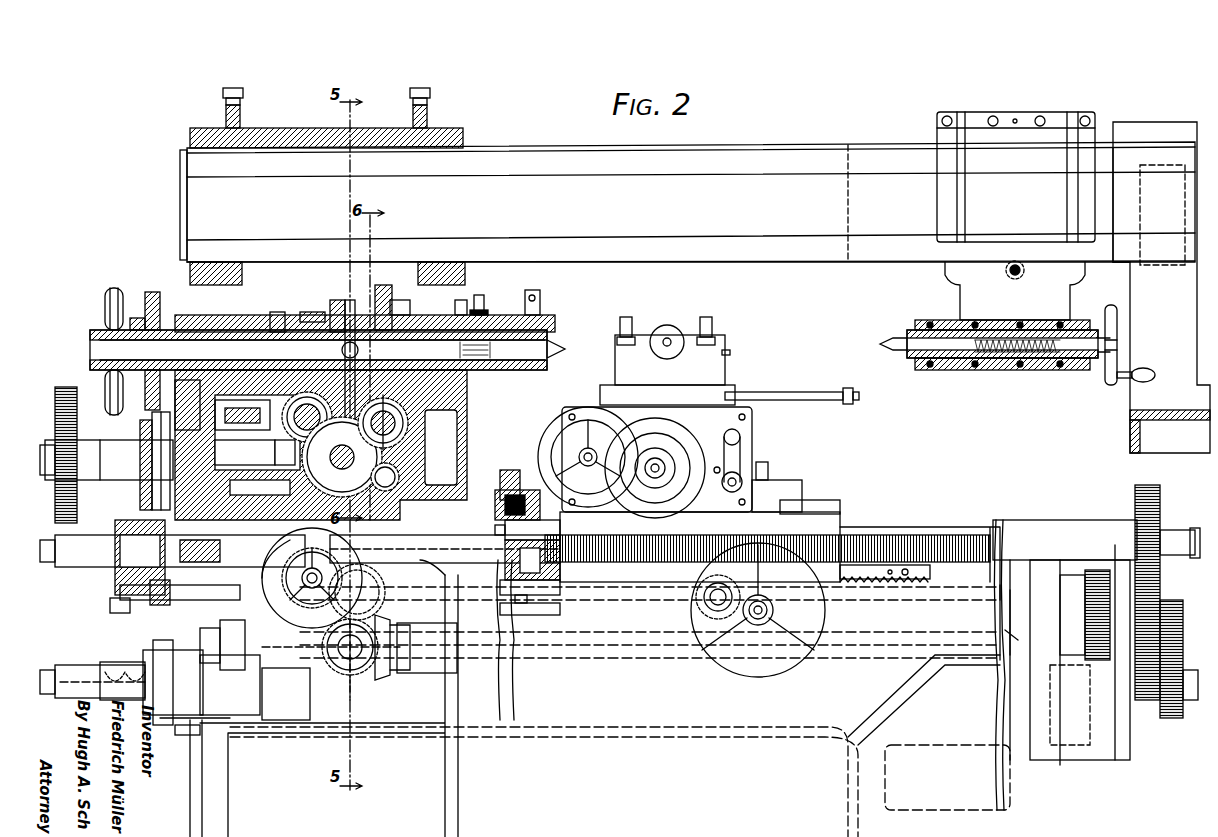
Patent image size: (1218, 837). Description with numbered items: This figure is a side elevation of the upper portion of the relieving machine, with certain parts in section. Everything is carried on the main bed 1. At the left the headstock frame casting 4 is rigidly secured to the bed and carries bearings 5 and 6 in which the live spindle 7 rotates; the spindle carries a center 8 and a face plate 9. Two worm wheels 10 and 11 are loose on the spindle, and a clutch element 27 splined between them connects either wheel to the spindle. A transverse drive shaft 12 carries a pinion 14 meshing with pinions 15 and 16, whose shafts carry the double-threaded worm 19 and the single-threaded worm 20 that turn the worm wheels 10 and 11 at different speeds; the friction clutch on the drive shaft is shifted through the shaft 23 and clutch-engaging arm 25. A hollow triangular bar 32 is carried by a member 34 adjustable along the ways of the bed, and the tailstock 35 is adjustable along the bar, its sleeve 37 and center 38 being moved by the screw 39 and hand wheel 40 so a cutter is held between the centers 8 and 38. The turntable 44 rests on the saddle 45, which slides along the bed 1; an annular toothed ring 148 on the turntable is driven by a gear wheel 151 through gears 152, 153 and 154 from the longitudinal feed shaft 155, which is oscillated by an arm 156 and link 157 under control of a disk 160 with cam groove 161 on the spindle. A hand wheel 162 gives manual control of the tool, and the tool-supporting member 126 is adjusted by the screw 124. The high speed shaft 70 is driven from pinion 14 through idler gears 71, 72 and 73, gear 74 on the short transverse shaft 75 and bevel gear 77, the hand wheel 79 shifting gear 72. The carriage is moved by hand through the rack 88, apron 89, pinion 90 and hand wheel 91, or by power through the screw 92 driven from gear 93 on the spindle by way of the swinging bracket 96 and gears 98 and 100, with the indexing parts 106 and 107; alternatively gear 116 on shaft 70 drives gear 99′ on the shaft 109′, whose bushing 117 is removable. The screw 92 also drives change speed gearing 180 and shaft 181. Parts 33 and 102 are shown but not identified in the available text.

The main bed 1 is at (650, 735).
The frame casting 4 is at (467, 455).
The bearing 5 is at (218, 315).
The bearing 6 is at (484, 310).
The live spindle 7 is at (90, 348).
The center 8 is at (555, 342).
The face plate 9 is at (540, 300).
The worm wheel 10 is at (330, 305).
The worm wheel 11 is at (378, 285).
The drive shaft 12 is at (283, 452).
The pinion 14 is at (325, 465).
The pinion 15 is at (270, 440).
The pinion 16 is at (405, 415).
The worm 19 is at (290, 415).
The worm 20 is at (395, 440).
The shaft 23 is at (392, 470).
The clutch-engaging arm 25 is at (390, 490).
The clutch element 27 is at (348, 300).
The bar 32 is at (520, 158).
The clamp plate 33 is at (320, 130).
The bar supporting member 34 is at (1170, 385).
The tailstock 35 is at (982, 110).
The sleeve 37 is at (960, 370).
The center 38 is at (890, 340).
The screw 39 is at (1025, 325).
The hand wheel 40 is at (1110, 382).
The turntable 44 is at (755, 440).
The saddle 45 is at (802, 494).
The high speed shaft 70 is at (305, 655).
The idler gear 71 is at (360, 535).
The idler gear 72 is at (345, 560).
The idler gear 73 is at (370, 585).
The gear 74 is at (355, 672).
The short transverse shaft 75 is at (320, 647).
The bevel gear 77 is at (390, 670).
The hand wheel 79 is at (290, 612).
The rack 88 is at (925, 574).
The apron 89 is at (840, 612).
The pinion 90 is at (700, 604).
The hand wheel 91 is at (745, 672).
The screw 92 is at (822, 528).
The gear 93 is at (275, 312).
The swinging bracket 96 is at (200, 412).
The gear 98 is at (242, 435).
The gear 99′ is at (238, 712).
The gear 100 is at (66, 387).
The shaft 102 is at (118, 582).
The indexing part 106 is at (120, 475).
The indexing part 107 is at (152, 428).
The shaft 109′ is at (128, 668).
The gear 116 is at (240, 608).
The bushing 117 is at (80, 665).
The screw 124 is at (853, 400).
The tool-supporting member 126 is at (726, 362).
The annular toothed ring 148 is at (515, 480).
The gear wheel 151 is at (505, 498).
The gear 152 is at (548, 528).
The gear 153 is at (560, 570).
The gear 154 is at (520, 598).
The longitudinal feed shaft 155 is at (560, 608).
The arm 156 is at (160, 602).
The link 157 is at (140, 452).
The disk 160 is at (115, 290).
The cam groove 161 is at (178, 292).
The hand wheel 162 is at (558, 432).
The change speed gearing 180 is at (1175, 605).
The shaft 181 is at (1082, 698).